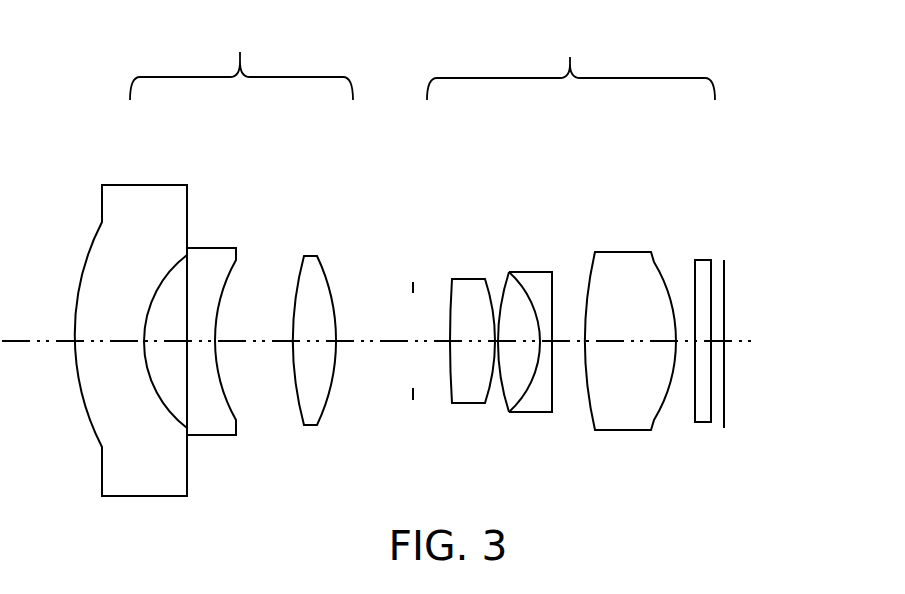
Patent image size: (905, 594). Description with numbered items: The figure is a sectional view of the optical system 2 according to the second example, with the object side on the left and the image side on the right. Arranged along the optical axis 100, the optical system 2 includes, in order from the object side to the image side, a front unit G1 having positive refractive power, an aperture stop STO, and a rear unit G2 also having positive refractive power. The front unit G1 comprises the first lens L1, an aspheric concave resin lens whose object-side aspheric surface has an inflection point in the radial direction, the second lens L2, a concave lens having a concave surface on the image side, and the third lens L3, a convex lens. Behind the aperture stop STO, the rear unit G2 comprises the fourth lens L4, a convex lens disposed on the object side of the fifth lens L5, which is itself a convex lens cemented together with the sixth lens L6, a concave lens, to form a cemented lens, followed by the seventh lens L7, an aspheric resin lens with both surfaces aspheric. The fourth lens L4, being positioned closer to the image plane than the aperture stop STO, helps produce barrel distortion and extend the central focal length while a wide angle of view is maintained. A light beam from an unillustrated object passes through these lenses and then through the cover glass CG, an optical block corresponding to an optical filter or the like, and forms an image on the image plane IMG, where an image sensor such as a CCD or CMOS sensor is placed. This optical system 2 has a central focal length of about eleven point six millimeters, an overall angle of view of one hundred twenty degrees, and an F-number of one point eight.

The optical system 2 is at (397, 23).
The front unit G1 is at (241, 61).
The rear unit G2 is at (571, 66).
The first lens L1 is at (142, 207).
The second lens L2 is at (210, 250).
The third lens L3 is at (312, 256).
The fourth lens L4 is at (465, 283).
The fifth lens L5 is at (512, 285).
The sixth lens L6 is at (535, 273).
The seventh lens L7 is at (624, 260).
The aperture stop STO is at (413, 390).
The cover glass CG is at (700, 423).
The image plane IMG is at (725, 284).
The optical axis 100 is at (745, 338).